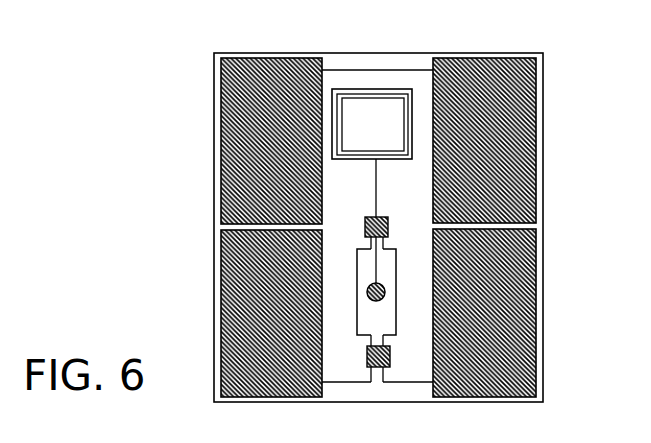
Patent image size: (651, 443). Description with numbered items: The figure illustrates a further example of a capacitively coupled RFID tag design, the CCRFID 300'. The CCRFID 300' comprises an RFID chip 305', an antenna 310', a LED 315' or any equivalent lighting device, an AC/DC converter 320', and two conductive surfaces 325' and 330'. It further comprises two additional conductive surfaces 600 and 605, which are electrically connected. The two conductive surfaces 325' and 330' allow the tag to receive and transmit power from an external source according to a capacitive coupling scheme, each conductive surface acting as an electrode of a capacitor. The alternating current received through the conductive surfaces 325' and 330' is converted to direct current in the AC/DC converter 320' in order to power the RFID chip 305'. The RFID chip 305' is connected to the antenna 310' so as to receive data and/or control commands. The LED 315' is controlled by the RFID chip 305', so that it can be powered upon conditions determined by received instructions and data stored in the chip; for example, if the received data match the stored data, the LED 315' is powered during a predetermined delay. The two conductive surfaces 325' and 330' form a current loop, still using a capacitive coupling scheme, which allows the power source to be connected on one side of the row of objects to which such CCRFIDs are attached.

The additional conductive surface 600 is at (263, 58).
The additional conductive surface 605 is at (474, 58).
The CCRFID 300' is at (348, 227).
The conductive surface 325' is at (240, 313).
The conductive surface 330' is at (516, 313).
The antenna 310' is at (371, 153).
The RFID chip 305' is at (392, 215).
The LED 315' is at (396, 286).
The AC/DC converter 320' is at (359, 358).